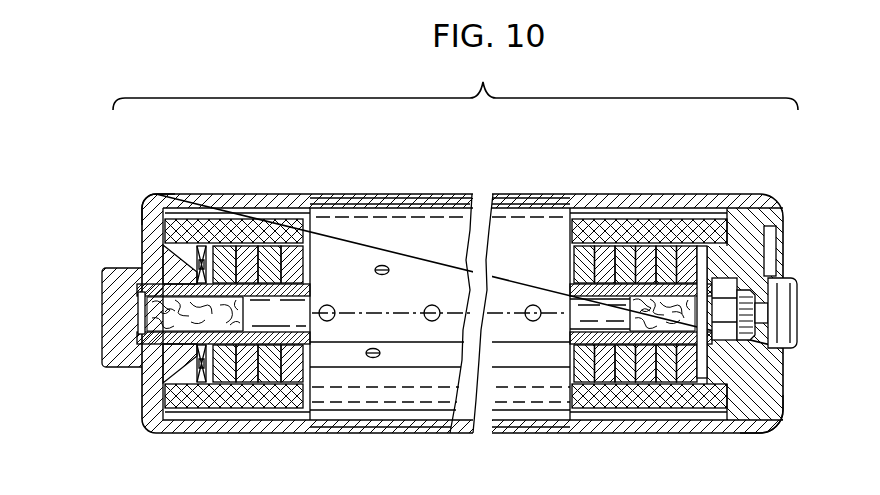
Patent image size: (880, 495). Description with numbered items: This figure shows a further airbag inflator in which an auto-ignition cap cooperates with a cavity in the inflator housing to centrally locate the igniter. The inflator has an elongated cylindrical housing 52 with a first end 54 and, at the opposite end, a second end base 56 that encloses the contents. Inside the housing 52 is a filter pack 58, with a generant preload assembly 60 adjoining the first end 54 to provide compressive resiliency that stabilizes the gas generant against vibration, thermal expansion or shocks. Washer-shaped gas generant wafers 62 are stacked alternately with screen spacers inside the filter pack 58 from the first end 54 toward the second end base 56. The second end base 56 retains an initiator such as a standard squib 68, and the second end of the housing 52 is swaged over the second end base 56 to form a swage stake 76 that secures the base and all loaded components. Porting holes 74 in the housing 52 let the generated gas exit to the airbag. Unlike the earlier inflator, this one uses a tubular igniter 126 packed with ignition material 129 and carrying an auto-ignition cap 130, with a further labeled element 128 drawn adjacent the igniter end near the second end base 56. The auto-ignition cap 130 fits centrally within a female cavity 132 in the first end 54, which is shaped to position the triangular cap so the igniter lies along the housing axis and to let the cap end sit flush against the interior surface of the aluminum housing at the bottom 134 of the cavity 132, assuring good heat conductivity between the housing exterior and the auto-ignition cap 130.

The elongated housing 52 is at (680, 195).
The first end 54 is at (147, 210).
The second end base 56 is at (768, 373).
The filter pack 58 is at (613, 222).
The generant preload assembly 60 is at (203, 255).
The gas generant wafers 62 is at (262, 246).
The squib 68 is at (774, 291).
The porting holes 74 is at (432, 322).
The swage stake 76 is at (767, 424).
The tubular igniter 126 is at (703, 267).
The retaining nut assembly 128 is at (695, 368).
The ignition material 129 is at (617, 316).
The auto-ignition cap 130 is at (144, 374).
The female cavity 132 is at (177, 279).
The bottom of cavity 134 is at (421, 314).